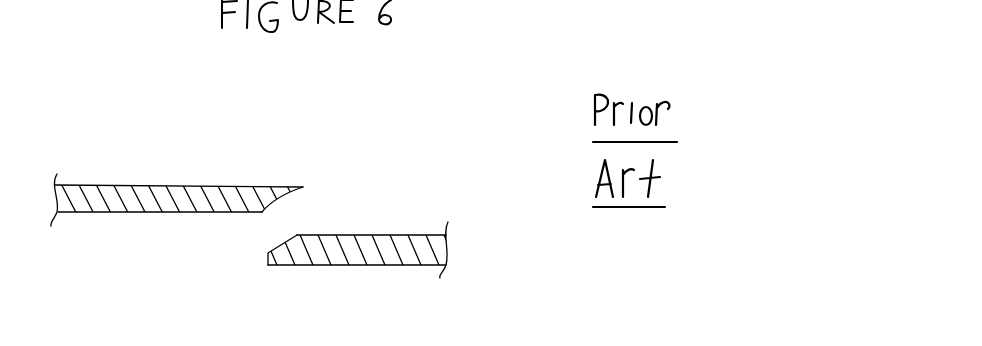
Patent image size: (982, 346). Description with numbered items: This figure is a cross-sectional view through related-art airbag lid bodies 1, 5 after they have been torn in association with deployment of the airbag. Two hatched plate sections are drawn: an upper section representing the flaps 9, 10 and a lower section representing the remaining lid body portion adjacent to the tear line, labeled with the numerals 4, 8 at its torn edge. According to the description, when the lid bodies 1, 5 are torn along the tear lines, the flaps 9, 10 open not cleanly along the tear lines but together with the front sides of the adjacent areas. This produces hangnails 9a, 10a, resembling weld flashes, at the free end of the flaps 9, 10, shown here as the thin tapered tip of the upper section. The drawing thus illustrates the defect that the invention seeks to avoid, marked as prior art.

The flap 9 is at (214, 162).
The flap 10 is at (214, 162).
The hangnail 9a is at (319, 166).
The hangnail 10a is at (293, 184).
The lid body 1 is at (357, 237).
The lid body 5 is at (357, 237).
The chamfered edge of lower plate 4 is at (275, 283).
The chamfered edge of lower plate 8 is at (268, 266).